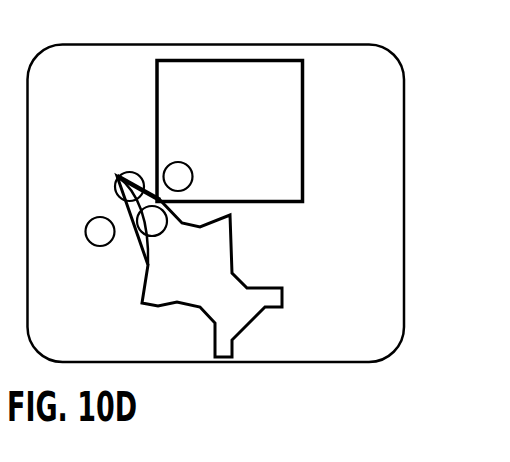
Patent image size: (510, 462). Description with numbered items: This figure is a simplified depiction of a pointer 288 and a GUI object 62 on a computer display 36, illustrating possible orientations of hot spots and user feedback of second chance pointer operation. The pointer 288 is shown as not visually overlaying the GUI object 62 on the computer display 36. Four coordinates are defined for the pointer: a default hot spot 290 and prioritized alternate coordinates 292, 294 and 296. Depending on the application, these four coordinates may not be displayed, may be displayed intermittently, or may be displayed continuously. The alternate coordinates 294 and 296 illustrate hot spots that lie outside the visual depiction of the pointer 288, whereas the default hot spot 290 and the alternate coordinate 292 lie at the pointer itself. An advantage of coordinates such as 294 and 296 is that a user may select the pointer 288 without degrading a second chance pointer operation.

The computer display 36 is at (112, 44).
The GUI object 62 is at (235, 60).
The pointer 288 is at (258, 287).
The default hot spot 290 is at (114, 197).
The prioritized alternate coordinate 292 is at (146, 270).
The alternate coordinate 294 is at (166, 168).
The alternate coordinate 296 is at (88, 242).